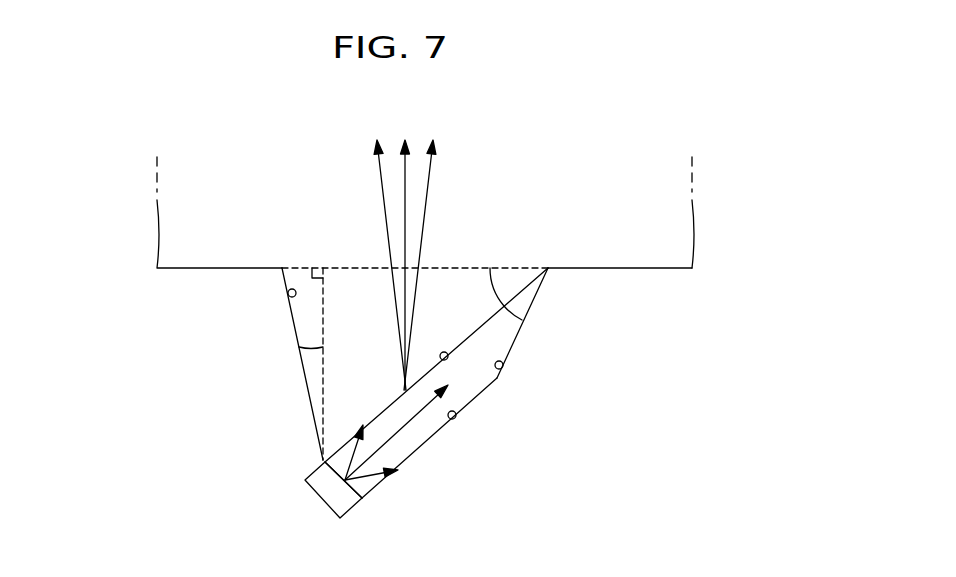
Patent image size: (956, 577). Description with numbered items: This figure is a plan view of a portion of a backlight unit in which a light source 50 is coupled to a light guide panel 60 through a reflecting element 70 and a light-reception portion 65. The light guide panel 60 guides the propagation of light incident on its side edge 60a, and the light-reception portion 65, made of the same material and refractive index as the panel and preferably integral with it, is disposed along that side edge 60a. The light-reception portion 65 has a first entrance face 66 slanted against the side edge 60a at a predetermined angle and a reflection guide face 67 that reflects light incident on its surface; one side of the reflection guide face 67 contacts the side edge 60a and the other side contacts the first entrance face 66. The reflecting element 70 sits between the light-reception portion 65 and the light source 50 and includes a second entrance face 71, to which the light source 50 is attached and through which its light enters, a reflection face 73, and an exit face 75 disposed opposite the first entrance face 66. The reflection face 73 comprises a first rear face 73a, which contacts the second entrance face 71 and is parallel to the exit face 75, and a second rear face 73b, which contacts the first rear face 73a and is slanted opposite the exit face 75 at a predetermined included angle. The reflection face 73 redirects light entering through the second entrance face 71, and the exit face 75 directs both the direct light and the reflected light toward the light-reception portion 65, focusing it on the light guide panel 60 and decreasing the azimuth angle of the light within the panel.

The light source 50 is at (322, 484).
The light guide panel 60 is at (425, 261).
The side edge 60a is at (588, 270).
The light-reception portion 65 is at (368, 364).
The first entrance face 66 is at (450, 350).
The reflection guide face 67 is at (288, 300).
The reflecting element 70 is at (447, 419).
The second entrance face 71 is at (348, 516).
The reflection face 73 is at (466, 409).
The first rear face 73a is at (455, 423).
The second rear face 73b is at (499, 382).
The exit face 75 is at (372, 414).